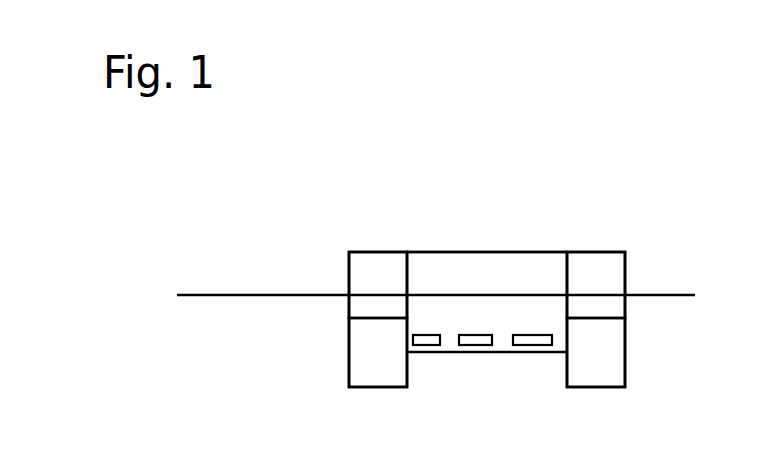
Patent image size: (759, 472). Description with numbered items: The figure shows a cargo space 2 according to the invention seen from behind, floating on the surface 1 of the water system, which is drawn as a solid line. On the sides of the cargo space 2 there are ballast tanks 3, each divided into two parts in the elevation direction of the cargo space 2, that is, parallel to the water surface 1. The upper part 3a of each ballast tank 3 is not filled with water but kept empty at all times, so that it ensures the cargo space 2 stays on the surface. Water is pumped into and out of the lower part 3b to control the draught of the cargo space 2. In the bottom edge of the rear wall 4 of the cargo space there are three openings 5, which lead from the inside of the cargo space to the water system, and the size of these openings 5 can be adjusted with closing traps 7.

The water surface level 1 is at (208, 295).
The cargo space 2 is at (463, 262).
The ballast tanks 3 is at (348, 270).
The upper part of ballast tank 3a is at (377, 262).
The lower part of ballast tank 3b is at (363, 343).
The rear wall 4 is at (502, 267).
The openings 5 is at (425, 345).
The closing traps 7 is at (532, 340).